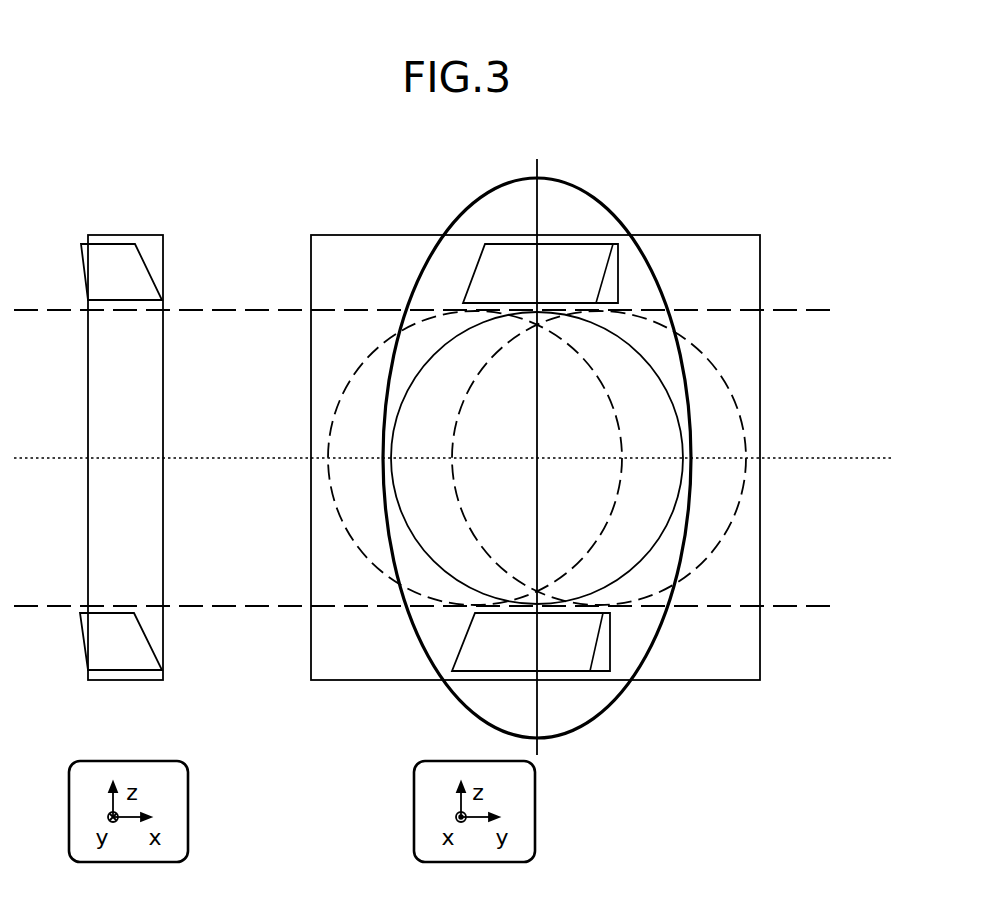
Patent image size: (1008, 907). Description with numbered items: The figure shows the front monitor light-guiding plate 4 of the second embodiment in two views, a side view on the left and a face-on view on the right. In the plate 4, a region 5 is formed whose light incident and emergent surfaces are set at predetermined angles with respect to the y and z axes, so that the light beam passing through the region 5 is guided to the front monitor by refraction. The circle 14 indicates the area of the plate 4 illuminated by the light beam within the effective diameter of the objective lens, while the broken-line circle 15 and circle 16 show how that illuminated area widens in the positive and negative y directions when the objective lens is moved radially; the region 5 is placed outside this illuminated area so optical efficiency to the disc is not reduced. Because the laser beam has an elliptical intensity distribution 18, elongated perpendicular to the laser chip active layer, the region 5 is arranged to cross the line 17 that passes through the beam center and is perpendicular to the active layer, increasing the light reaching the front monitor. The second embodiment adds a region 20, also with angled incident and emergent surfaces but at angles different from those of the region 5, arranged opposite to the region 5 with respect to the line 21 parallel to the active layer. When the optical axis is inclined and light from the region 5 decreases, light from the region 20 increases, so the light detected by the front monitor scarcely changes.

The front monitor light-guiding plate 4 is at (311, 547).
The region 5 is at (473, 275).
The circle 14 is at (678, 416).
The circle 15 is at (742, 490).
The circle 16 is at (601, 533).
The line 17 is at (537, 176).
The elliptical intensity distribution 18 is at (595, 713).
The region 20 is at (465, 640).
The line 21 is at (867, 454).